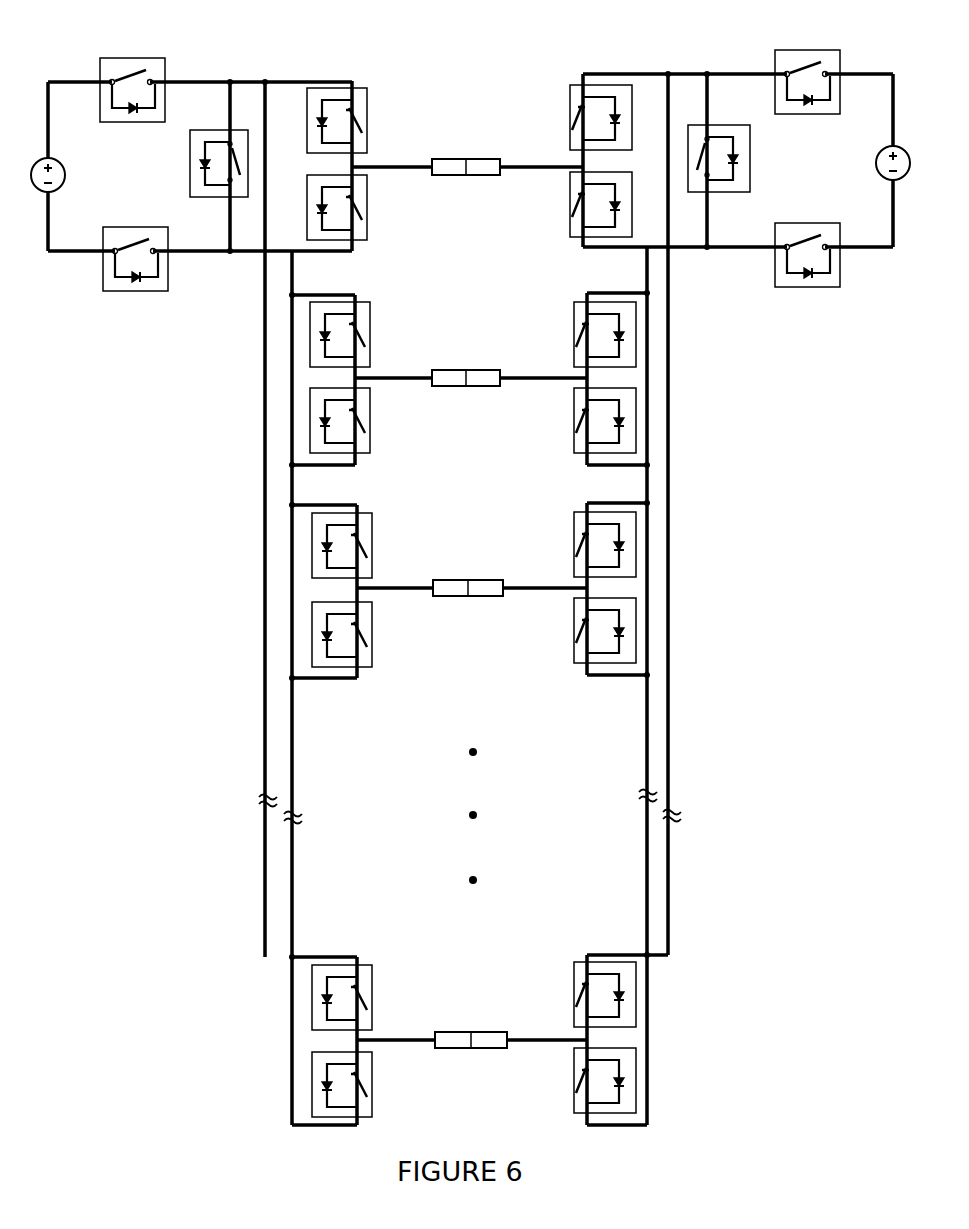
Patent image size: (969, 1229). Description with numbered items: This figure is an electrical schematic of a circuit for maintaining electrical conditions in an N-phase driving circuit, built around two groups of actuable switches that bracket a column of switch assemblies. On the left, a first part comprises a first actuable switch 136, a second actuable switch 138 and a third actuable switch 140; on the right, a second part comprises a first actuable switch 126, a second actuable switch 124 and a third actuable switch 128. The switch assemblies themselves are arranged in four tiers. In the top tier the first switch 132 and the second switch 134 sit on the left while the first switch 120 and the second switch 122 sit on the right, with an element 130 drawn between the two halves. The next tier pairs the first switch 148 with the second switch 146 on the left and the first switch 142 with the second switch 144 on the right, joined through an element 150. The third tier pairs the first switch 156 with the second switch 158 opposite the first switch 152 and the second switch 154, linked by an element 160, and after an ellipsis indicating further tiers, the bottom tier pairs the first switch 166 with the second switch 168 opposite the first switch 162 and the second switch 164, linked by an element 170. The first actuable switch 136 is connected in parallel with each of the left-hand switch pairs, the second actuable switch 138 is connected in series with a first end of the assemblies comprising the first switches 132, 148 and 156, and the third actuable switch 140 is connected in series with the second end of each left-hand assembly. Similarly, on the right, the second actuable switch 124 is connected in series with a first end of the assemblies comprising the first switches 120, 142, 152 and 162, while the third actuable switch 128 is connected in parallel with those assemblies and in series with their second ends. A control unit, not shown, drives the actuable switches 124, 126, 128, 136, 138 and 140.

The first switch 120 is at (570, 115).
The second switch 122 is at (570, 203).
The second actuable switch 124 is at (800, 52).
The first actuable switch 126 is at (750, 158).
The third actuable switch 128 is at (813, 218).
The load resistor 130 is at (463, 152).
The first switch 132 is at (367, 122).
The second switch 134 is at (367, 207).
The first actuable switch 136 is at (188, 165).
The second actuable switch 138 is at (137, 62).
The third actuable switch 140 is at (135, 225).
The first switch 142 is at (570, 333).
The second switch 144 is at (570, 420).
The second switch 146 is at (368, 418).
The first switch 148 is at (368, 333).
The load resistor 150 is at (467, 368).
The first switch 152 is at (570, 543).
The second switch 154 is at (570, 630).
The first switch 156 is at (372, 545).
The second switch 158 is at (372, 632).
The load resistor 160 is at (467, 578).
The first switch 162 is at (570, 1000).
The second switch 164 is at (570, 1088).
The first switch 166 is at (375, 1003).
The second switch 168 is at (375, 1090).
The load resistor 170 is at (472, 1030).